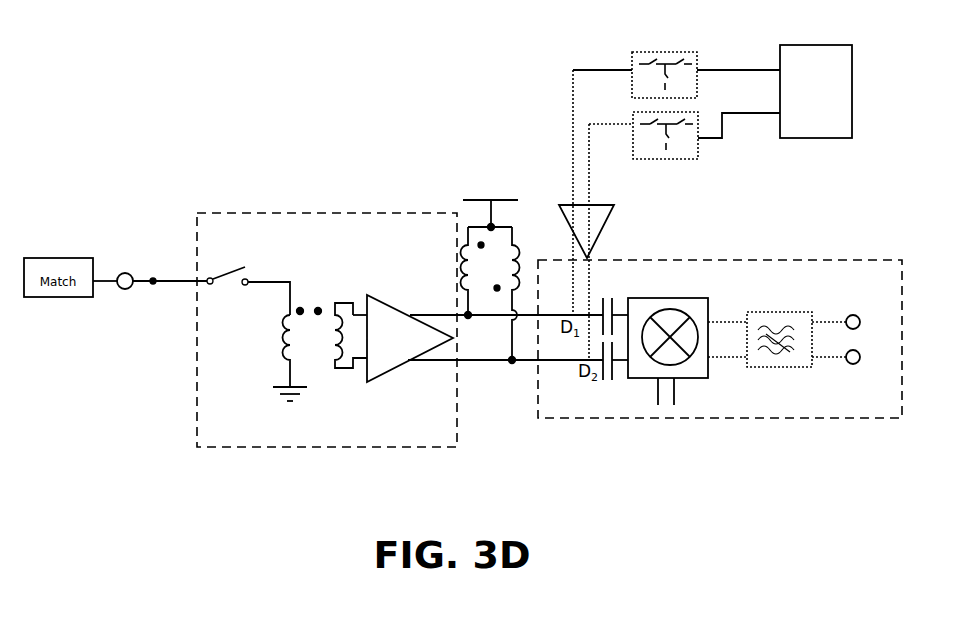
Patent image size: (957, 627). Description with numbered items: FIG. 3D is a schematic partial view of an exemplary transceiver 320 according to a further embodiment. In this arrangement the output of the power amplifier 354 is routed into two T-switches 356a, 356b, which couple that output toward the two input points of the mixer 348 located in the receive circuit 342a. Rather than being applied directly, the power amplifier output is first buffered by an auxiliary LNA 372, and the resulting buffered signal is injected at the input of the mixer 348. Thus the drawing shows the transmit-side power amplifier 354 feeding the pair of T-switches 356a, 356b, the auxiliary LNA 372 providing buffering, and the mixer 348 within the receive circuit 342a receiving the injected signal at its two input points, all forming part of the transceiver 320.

The transceiver 320 is at (457, 131).
The auxiliary LNA 372 is at (565, 196).
The T-switch 356a is at (692, 194).
The T-switch 356b is at (635, 34).
The power amplifier 354 is at (797, 179).
The mixer 348 is at (650, 286).
The receive circuit 342a is at (870, 286).